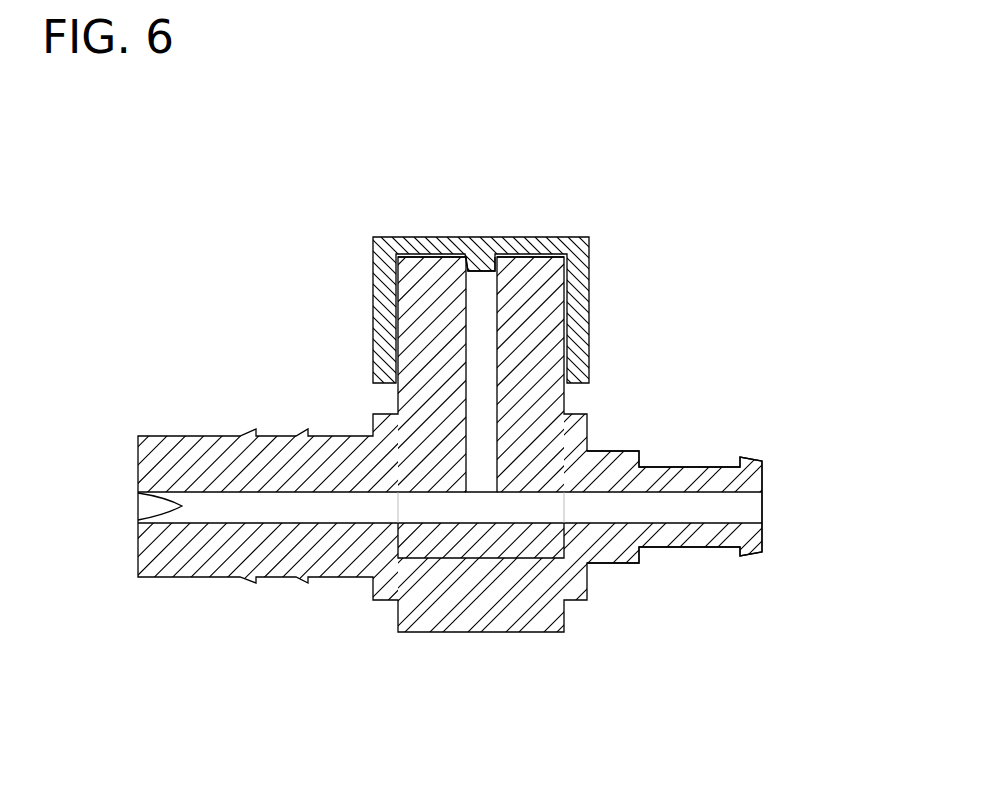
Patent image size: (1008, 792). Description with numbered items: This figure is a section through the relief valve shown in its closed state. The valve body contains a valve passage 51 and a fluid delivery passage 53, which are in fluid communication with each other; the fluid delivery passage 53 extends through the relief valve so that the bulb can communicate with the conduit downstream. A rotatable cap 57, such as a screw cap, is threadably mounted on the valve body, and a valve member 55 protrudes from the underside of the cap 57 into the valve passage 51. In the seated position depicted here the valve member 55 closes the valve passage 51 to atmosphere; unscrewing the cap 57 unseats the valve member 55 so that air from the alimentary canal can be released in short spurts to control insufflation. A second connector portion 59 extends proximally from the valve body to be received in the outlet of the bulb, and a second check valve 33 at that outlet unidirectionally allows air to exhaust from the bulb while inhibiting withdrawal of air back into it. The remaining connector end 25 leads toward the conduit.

The outlet connector portion 25 is at (698, 537).
The second check valve 33 is at (164, 512).
The valve passage 51 is at (475, 360).
The fluid delivery passage 53 is at (198, 504).
The valve member 55 is at (482, 272).
The rotatable cap 57 is at (533, 243).
The second connector portion 59 is at (217, 558).